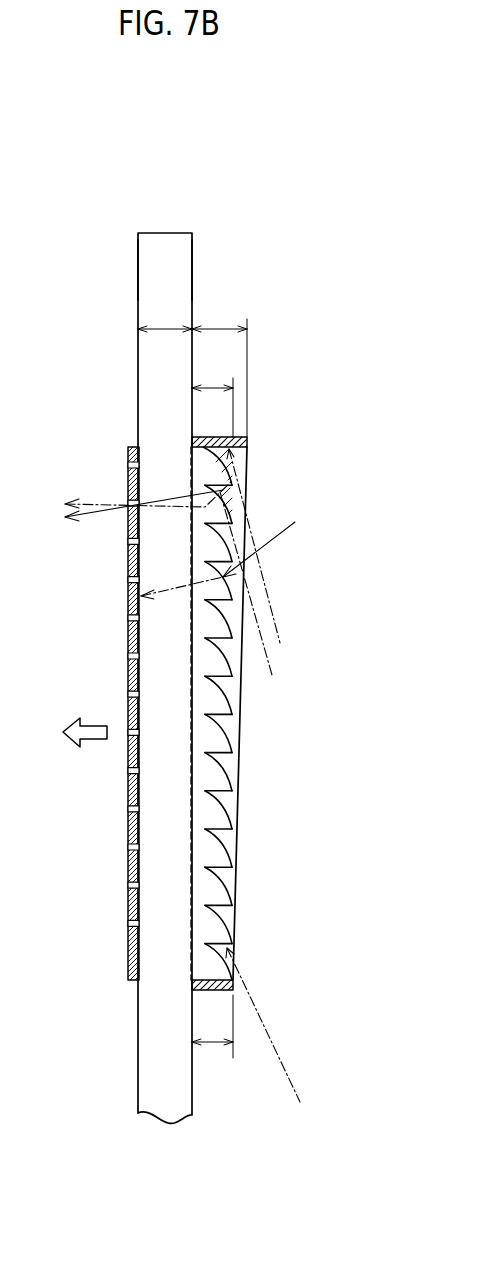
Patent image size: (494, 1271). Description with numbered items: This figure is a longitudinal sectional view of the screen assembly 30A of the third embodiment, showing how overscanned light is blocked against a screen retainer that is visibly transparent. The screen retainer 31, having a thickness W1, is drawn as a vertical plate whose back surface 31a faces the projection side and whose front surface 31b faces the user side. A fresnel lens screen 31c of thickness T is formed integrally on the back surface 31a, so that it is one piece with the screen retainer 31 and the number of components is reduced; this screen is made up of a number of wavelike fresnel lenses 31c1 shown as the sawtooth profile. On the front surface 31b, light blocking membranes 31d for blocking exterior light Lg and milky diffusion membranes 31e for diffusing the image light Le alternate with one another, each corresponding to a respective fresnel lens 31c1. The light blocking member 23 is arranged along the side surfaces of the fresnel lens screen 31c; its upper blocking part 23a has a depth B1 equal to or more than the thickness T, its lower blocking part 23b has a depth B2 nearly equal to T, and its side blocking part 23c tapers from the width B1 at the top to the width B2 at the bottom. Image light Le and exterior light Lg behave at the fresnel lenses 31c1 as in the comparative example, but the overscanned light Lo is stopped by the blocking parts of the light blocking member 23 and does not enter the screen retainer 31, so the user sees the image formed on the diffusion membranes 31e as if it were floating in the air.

The screen assembly 30A is at (198, 181).
The screen retainer 31 is at (158, 233).
The back surface 31a is at (193, 263).
The front surface 31b is at (137, 263).
The fresnel lens screen 31c is at (218, 793).
The fresnel lens 31c1 is at (227, 765).
The light blocking membrane 31d is at (127, 602).
The milky diffusion membrane 31e is at (128, 501).
The light blocking member 23 is at (248, 457).
The upper blocking part 23a is at (214, 437).
The lower blocking part 23b is at (213, 991).
The left blocking part 23c is at (228, 687).
The thickness of screen retainer W1 is at (165, 314).
The depth of upper blocking part B1 is at (219, 367).
The depth of lower blocking part B2 is at (212, 1026).
The thickness of fresnel lens screen T is at (212, 397).
The exterior light Lg is at (297, 526).
The overscanned light Lo is at (269, 600).
The image light Le is at (270, 664).